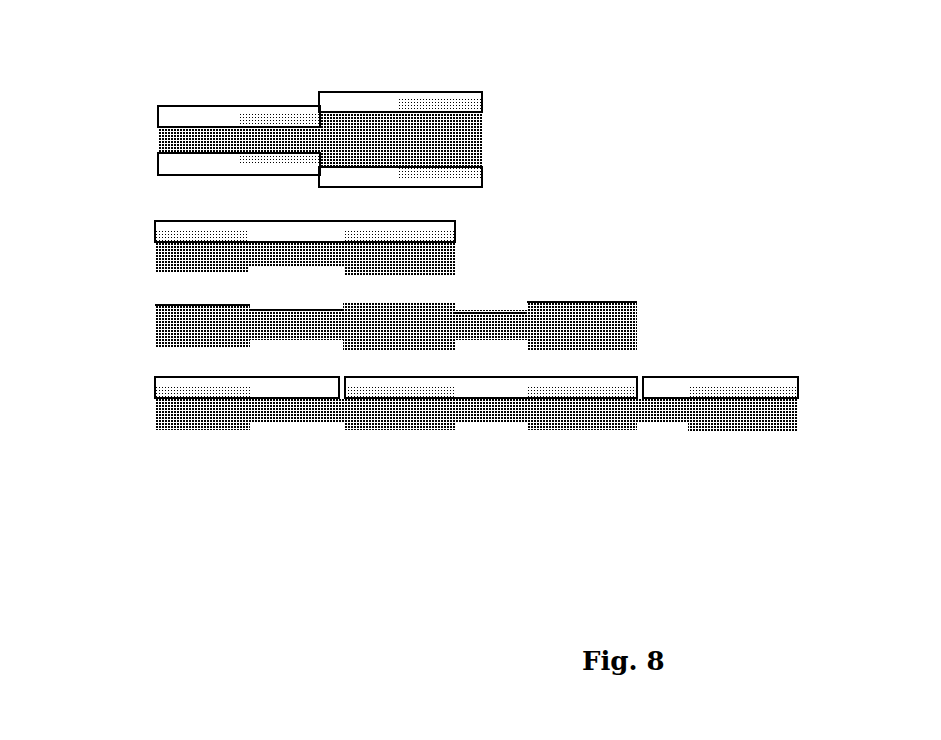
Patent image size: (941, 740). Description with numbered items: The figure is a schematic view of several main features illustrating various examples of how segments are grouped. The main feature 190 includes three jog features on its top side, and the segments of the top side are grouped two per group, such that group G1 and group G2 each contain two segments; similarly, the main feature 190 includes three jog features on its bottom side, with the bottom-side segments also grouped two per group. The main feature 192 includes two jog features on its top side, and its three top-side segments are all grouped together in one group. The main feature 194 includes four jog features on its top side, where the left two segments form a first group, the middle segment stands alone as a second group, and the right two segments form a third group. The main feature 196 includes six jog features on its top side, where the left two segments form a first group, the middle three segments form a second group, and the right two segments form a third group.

The main feature 190 is at (340, 110).
The main feature 192 is at (540, 251).
The main feature 194 is at (674, 327).
The main feature 196 is at (835, 414).
The group G1 is at (235, 110).
The group G2 is at (390, 90).